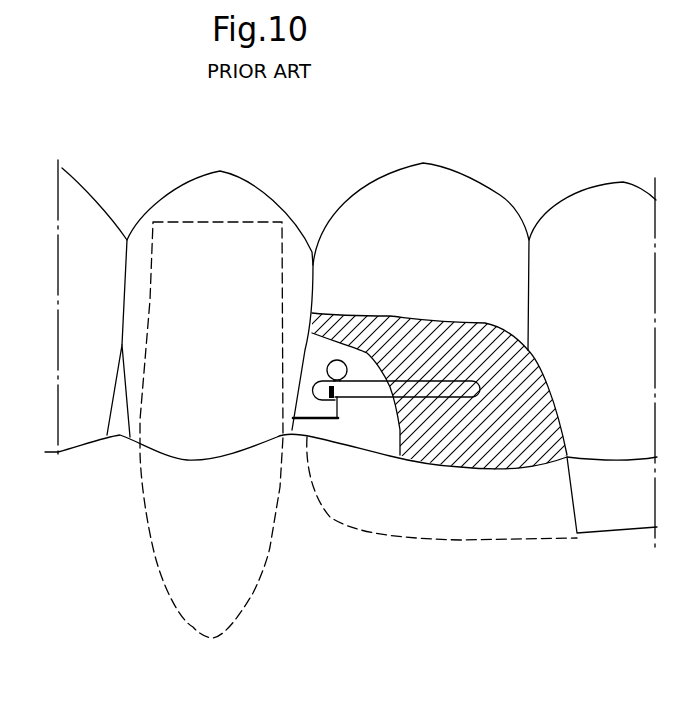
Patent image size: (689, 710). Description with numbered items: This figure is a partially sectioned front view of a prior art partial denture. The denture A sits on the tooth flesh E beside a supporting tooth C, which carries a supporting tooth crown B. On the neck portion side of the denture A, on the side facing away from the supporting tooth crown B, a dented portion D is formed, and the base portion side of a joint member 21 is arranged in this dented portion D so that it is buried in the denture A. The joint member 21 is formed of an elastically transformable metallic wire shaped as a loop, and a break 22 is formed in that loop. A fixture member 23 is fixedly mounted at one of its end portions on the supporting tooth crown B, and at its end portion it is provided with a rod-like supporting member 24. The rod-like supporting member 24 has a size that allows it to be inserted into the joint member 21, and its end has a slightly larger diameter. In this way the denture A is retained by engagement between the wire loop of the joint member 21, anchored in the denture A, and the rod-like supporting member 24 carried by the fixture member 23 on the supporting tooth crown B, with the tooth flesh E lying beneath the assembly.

The denture A is at (454, 185).
The supporting tooth crown B is at (172, 205).
The supporting tooth C is at (197, 220).
The dented portion D is at (330, 428).
The tooth flesh E is at (341, 483).
The joint member 21 is at (385, 397).
The break 22 is at (337, 418).
The fixture member 23 is at (336, 399).
The rod-like supporting member 24 is at (328, 372).